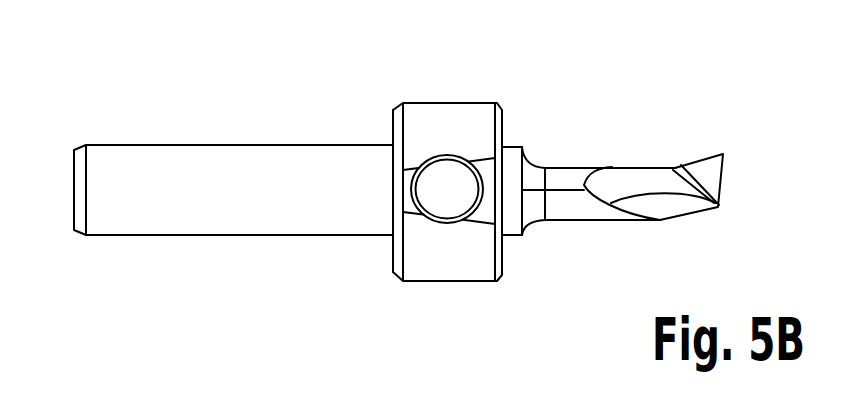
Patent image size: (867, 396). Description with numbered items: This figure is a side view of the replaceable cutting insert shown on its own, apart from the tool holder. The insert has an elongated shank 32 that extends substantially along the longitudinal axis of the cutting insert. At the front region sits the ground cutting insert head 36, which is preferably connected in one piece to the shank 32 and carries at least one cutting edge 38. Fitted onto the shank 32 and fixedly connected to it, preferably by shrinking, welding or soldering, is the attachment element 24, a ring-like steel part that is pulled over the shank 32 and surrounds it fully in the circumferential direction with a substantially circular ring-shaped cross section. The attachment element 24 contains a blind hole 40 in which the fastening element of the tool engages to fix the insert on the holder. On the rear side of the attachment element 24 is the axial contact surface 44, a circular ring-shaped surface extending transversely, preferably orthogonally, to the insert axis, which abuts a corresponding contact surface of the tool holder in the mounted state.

The shank 32 is at (225, 208).
The attachment element 24 is at (455, 120).
The axial contact surface 44 is at (390, 125).
The blind hole 40 is at (447, 188).
The cutting insert head 36 is at (588, 210).
The cutting edge 38 is at (705, 170).